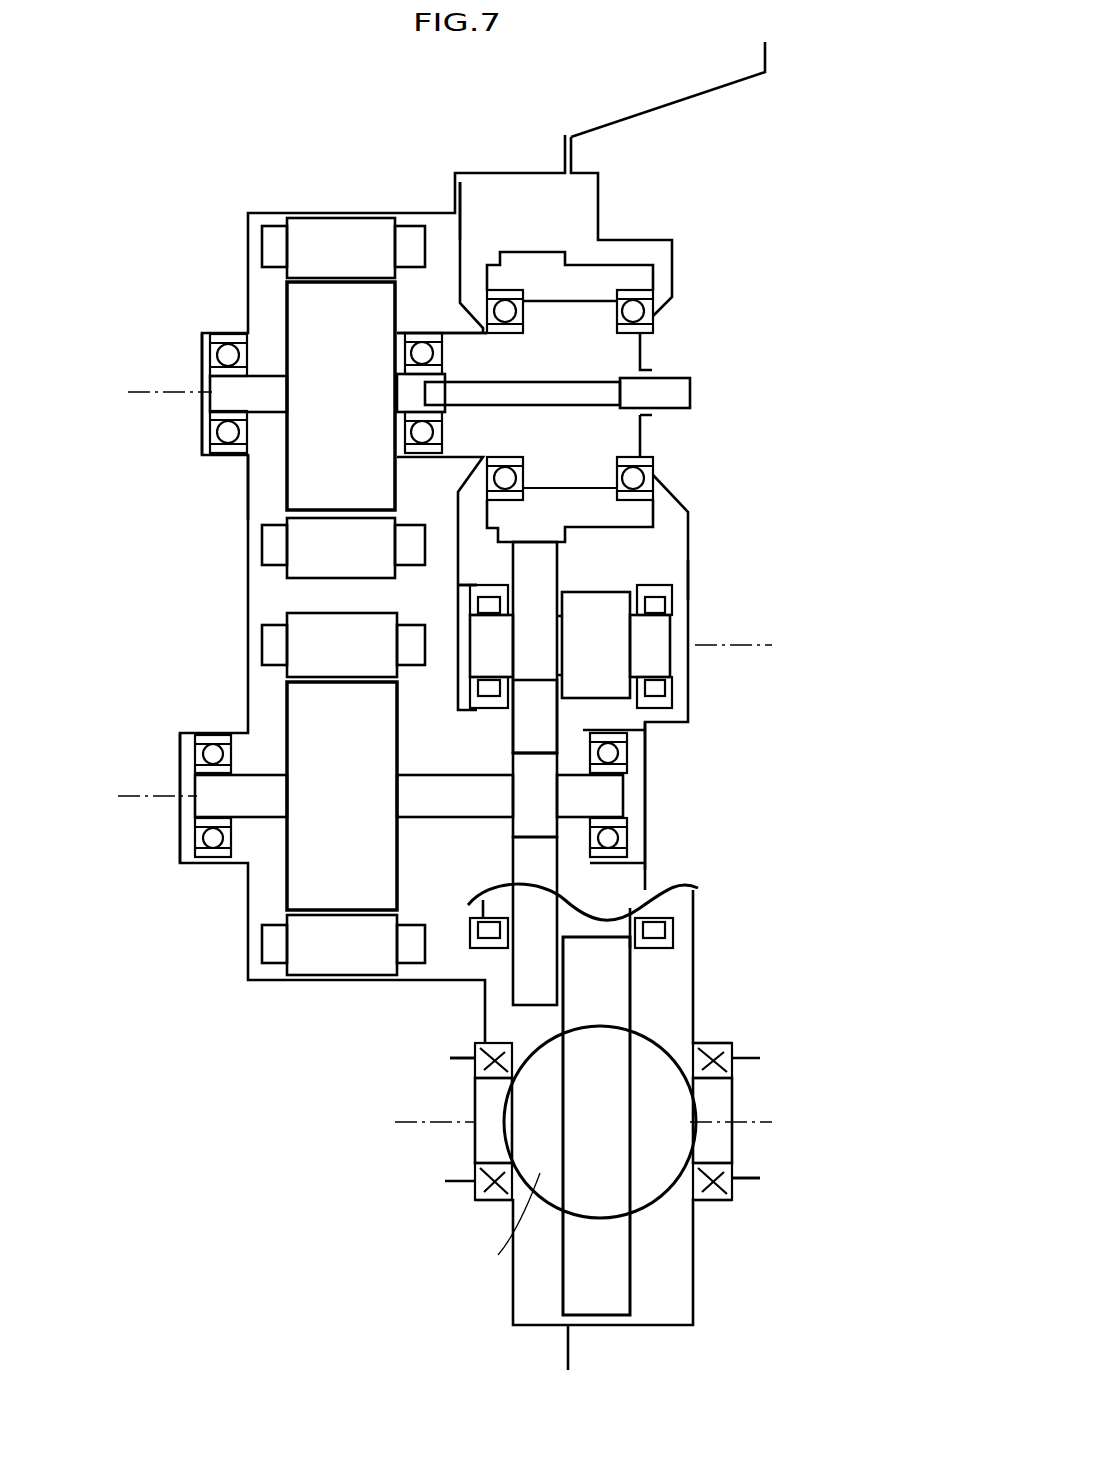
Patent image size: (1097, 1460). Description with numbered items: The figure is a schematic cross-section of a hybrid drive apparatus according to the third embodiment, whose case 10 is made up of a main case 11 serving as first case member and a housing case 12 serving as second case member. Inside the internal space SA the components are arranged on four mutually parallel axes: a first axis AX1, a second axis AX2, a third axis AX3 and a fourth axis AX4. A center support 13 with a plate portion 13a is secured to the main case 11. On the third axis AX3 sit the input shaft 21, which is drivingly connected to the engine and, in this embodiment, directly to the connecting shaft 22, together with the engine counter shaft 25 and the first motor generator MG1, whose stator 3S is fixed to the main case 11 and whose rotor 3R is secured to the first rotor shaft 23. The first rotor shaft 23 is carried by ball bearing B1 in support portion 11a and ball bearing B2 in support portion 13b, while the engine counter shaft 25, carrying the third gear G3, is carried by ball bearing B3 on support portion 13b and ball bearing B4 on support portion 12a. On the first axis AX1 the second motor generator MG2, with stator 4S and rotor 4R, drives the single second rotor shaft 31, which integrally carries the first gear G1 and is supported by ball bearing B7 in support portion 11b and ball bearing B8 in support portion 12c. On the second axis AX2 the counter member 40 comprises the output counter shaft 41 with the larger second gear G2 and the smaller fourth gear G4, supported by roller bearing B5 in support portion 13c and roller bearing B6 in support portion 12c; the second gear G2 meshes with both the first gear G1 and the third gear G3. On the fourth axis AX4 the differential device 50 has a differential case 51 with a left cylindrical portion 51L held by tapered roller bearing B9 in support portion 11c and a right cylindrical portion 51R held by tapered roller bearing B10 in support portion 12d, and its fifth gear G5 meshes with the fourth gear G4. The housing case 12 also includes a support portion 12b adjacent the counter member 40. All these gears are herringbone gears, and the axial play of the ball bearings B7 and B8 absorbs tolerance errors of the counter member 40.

The case 10 is at (550, 92).
The main case 11 is at (459, 166).
The housing case 12 is at (594, 123).
The center support 13 is at (452, 231).
The plate portion 13a is at (463, 238).
The support portion 13b is at (460, 330).
The support portion 13c is at (462, 584).
The support portion 11a is at (218, 335).
The support portion 11b is at (212, 868).
The support portion 11c is at (480, 1046).
The support portion 12a is at (641, 456).
The bearing support portion 12b is at (662, 588).
The support portion 12c is at (655, 878).
The support portion 12d is at (712, 1205).
The first motor generator MG1 is at (188, 215).
The second motor generator MG2 is at (188, 612).
The stator 3S is at (294, 250).
The rotor 3R is at (296, 300).
The stator 4S is at (294, 650).
The rotor 4R is at (296, 703).
The input shaft 21 is at (690, 394).
The connecting shaft 22 is at (480, 392).
The first rotor shaft 23 is at (218, 402).
The engine counter shaft 25 is at (640, 511).
The second rotor shaft 31 is at (198, 805).
The counter member 40 is at (706, 607).
The output counter shaft 41 is at (655, 662).
The differential device 50 is at (648, 1038).
The differential case 51 is at (498, 1255).
The left cylindrical portion 51L is at (475, 1142).
The right cylindrical portion 51R is at (715, 1143).
The first gear G1 is at (518, 825).
The second gear G2 is at (518, 740).
The third gear G3 is at (555, 542).
The fourth gear G4 is at (608, 600).
The fifth gear G5 is at (615, 962).
The ball bearing B1 is at (210, 368).
The ball bearing B2 is at (414, 445).
The ball bearing B3 is at (510, 298).
The ball bearing B4 is at (646, 300).
The roller bearing B5 is at (470, 730).
The roller bearing B6 is at (665, 708).
The ball bearing B7 is at (198, 852).
The ball bearing B8 is at (625, 822).
The tapered roller bearing B9 is at (475, 1068).
The tapered roller bearing B10 is at (735, 1056).
The internal space SA is at (248, 488).
The first axis AX1 is at (129, 796).
The second axis AX2 is at (759, 645).
The third axis AX3 is at (137, 392).
The fourth axis AX4 is at (609, 1122).